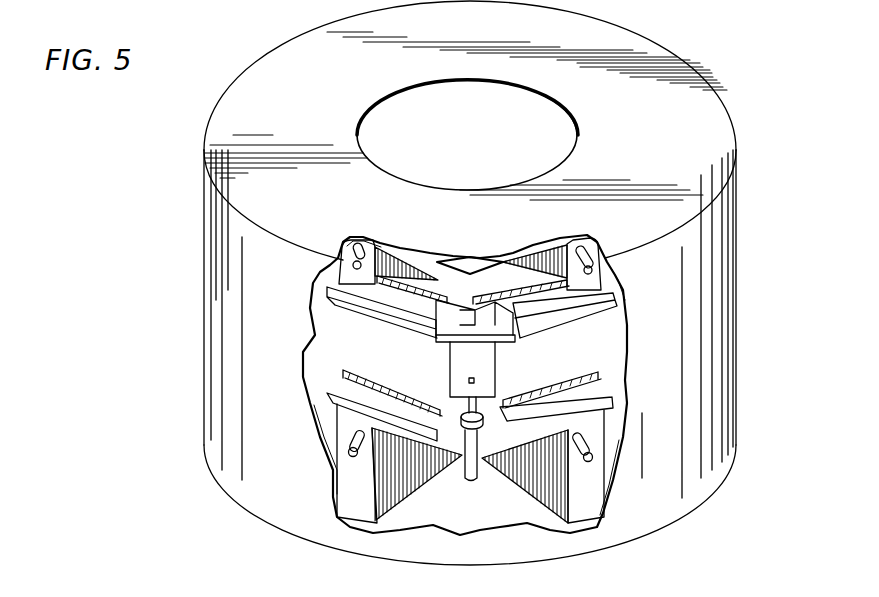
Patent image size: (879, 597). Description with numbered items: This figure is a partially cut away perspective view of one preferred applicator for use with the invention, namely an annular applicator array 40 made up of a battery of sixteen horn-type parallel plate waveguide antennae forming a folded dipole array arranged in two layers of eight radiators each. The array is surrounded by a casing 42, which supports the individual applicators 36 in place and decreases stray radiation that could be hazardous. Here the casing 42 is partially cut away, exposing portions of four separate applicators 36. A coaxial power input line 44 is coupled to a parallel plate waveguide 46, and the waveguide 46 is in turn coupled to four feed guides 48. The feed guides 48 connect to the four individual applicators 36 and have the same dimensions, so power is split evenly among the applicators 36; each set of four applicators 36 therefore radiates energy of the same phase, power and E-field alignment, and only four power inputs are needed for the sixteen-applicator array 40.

The applicator array 40 is at (478, 283).
The casing 42 is at (205, 295).
The applicator 36 is at (420, 252).
The feed guide 48 is at (365, 322).
The parallel plate waveguide 46 is at (458, 368).
The coaxial power input line 44 is at (478, 480).